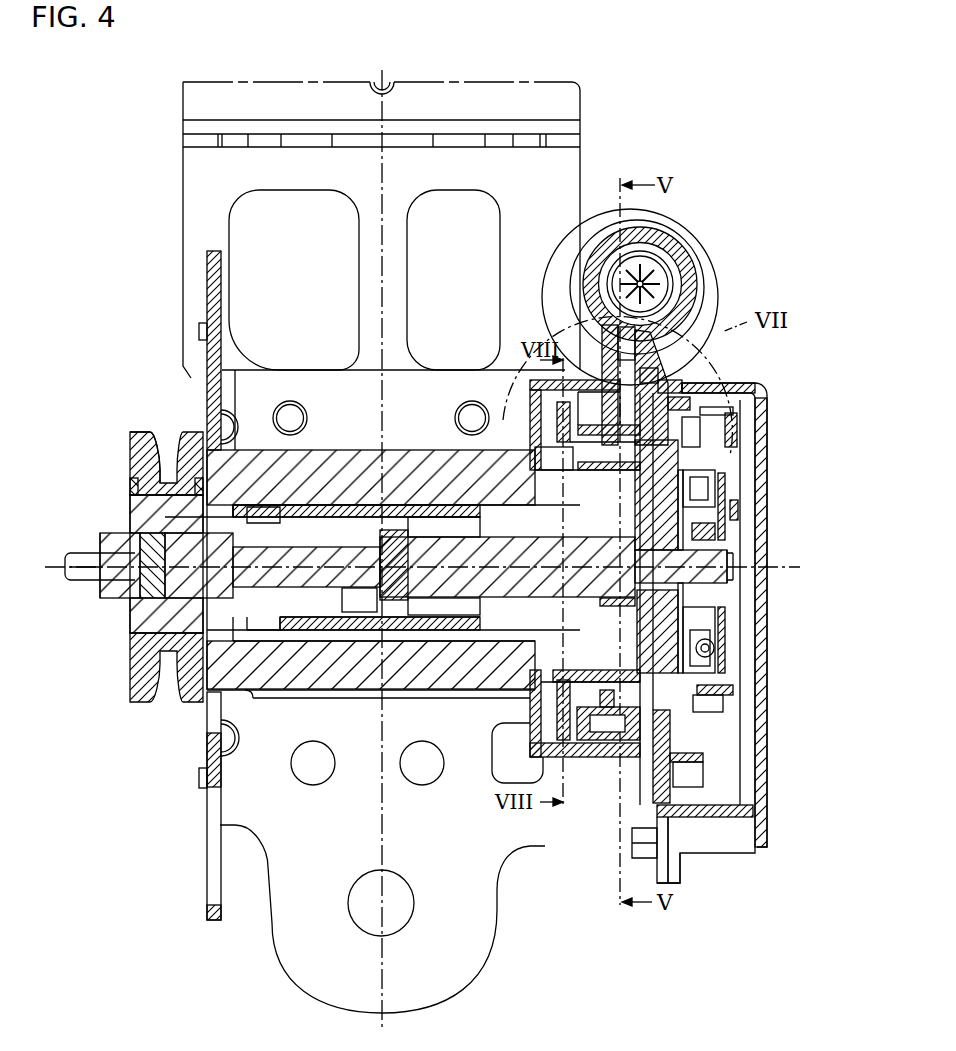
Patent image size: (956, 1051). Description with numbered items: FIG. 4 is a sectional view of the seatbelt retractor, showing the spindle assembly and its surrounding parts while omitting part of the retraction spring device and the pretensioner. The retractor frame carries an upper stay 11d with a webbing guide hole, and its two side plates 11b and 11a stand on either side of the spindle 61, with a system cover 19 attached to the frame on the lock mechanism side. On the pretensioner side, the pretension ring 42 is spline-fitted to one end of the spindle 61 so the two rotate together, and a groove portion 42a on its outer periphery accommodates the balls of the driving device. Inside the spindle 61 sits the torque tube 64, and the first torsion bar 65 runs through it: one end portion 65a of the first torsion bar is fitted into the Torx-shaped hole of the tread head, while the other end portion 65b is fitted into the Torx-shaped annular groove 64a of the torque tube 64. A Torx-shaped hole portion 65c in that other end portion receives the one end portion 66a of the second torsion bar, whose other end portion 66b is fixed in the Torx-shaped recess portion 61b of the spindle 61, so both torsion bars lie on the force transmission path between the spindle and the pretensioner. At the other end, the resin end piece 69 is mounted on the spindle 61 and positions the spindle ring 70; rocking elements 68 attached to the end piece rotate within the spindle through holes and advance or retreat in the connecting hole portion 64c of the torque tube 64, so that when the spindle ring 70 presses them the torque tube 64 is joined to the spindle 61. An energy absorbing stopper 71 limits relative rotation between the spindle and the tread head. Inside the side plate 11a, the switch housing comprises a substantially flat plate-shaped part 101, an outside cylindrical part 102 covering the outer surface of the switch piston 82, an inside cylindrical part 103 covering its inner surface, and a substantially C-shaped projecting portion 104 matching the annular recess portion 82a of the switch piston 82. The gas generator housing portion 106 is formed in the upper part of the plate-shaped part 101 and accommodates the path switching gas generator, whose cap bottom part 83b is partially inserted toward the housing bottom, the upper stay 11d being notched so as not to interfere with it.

The upper stay 11d is at (576, 158).
The side plate 11b is at (208, 740).
The side plate 11a is at (660, 769).
The system cover 19 is at (727, 820).
The pretension ring 42 is at (130, 465).
The groove portion 42a is at (148, 440).
The spindle 61 is at (473, 672).
The recess portion 61b is at (137, 583).
The torque tube 64 is at (298, 655).
The annular groove 64a is at (360, 660).
The connecting hole portion 64c is at (718, 562).
The first torsion bar 65 is at (470, 672).
The one end portion of the first torsion bar 65a is at (600, 607).
The other end portion of the first torsion bar 65b is at (398, 535).
The hole portion 65c is at (165, 565).
The end portion of the second torsion bar 66a is at (408, 527).
The second bearing 66b is at (160, 528).
The rocking element 68 is at (690, 488).
The end piece 69 is at (512, 470).
The spindle ring 70 is at (652, 703).
The energy absorbing stopper 71 is at (693, 641).
The switch piston 82 is at (706, 438).
The annular recess portion 82a is at (703, 411).
The bottom part 83b is at (628, 255).
The substantially flat plate-shaped part 101 is at (672, 388).
The outside cylindrical part 102 is at (572, 757).
The inside cylindrical part 103 is at (612, 757).
The substantially C-shaped projecting portion 104 is at (600, 760).
The gas generator housing portion 106 is at (697, 283).